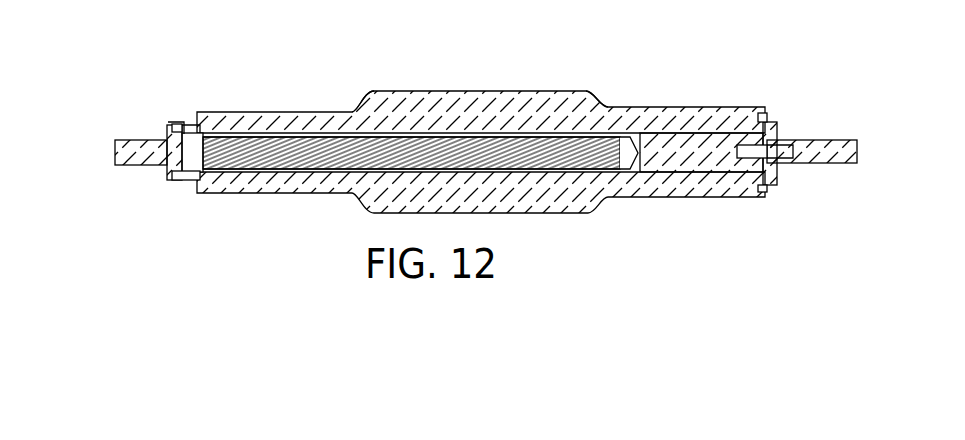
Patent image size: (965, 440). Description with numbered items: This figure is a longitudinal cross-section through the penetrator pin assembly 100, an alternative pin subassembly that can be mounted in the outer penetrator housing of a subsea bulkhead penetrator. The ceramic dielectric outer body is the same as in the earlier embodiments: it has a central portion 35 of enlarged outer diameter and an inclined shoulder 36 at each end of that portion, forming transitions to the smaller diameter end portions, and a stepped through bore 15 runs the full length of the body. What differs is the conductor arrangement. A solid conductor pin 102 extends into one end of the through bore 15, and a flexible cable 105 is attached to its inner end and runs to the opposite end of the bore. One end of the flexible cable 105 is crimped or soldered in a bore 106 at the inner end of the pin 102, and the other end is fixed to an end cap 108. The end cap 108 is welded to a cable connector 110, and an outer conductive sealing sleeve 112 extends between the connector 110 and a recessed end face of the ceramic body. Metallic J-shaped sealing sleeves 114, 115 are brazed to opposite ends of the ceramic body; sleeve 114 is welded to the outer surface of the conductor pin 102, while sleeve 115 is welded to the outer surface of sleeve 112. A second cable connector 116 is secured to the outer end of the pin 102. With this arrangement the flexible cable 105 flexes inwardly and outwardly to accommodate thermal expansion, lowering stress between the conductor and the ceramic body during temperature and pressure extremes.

The penetrator pin assembly 100 is at (290, 243).
The solid conductor pin 102 is at (673, 142).
The flexible cable 105 is at (400, 150).
The bore 106 is at (628, 160).
The end cap 108 is at (193, 157).
The cable connector 110 is at (140, 150).
The conductive sealing sleeve 112 is at (173, 127).
The J-shaped sealing sleeve 114 is at (770, 113).
The J-shaped sealing sleeve 115 is at (193, 116).
The second cable connector 116 is at (837, 152).
The through bore 15 is at (267, 132).
The central portion 35 is at (490, 91).
The inclined shoulder 36 is at (357, 101).